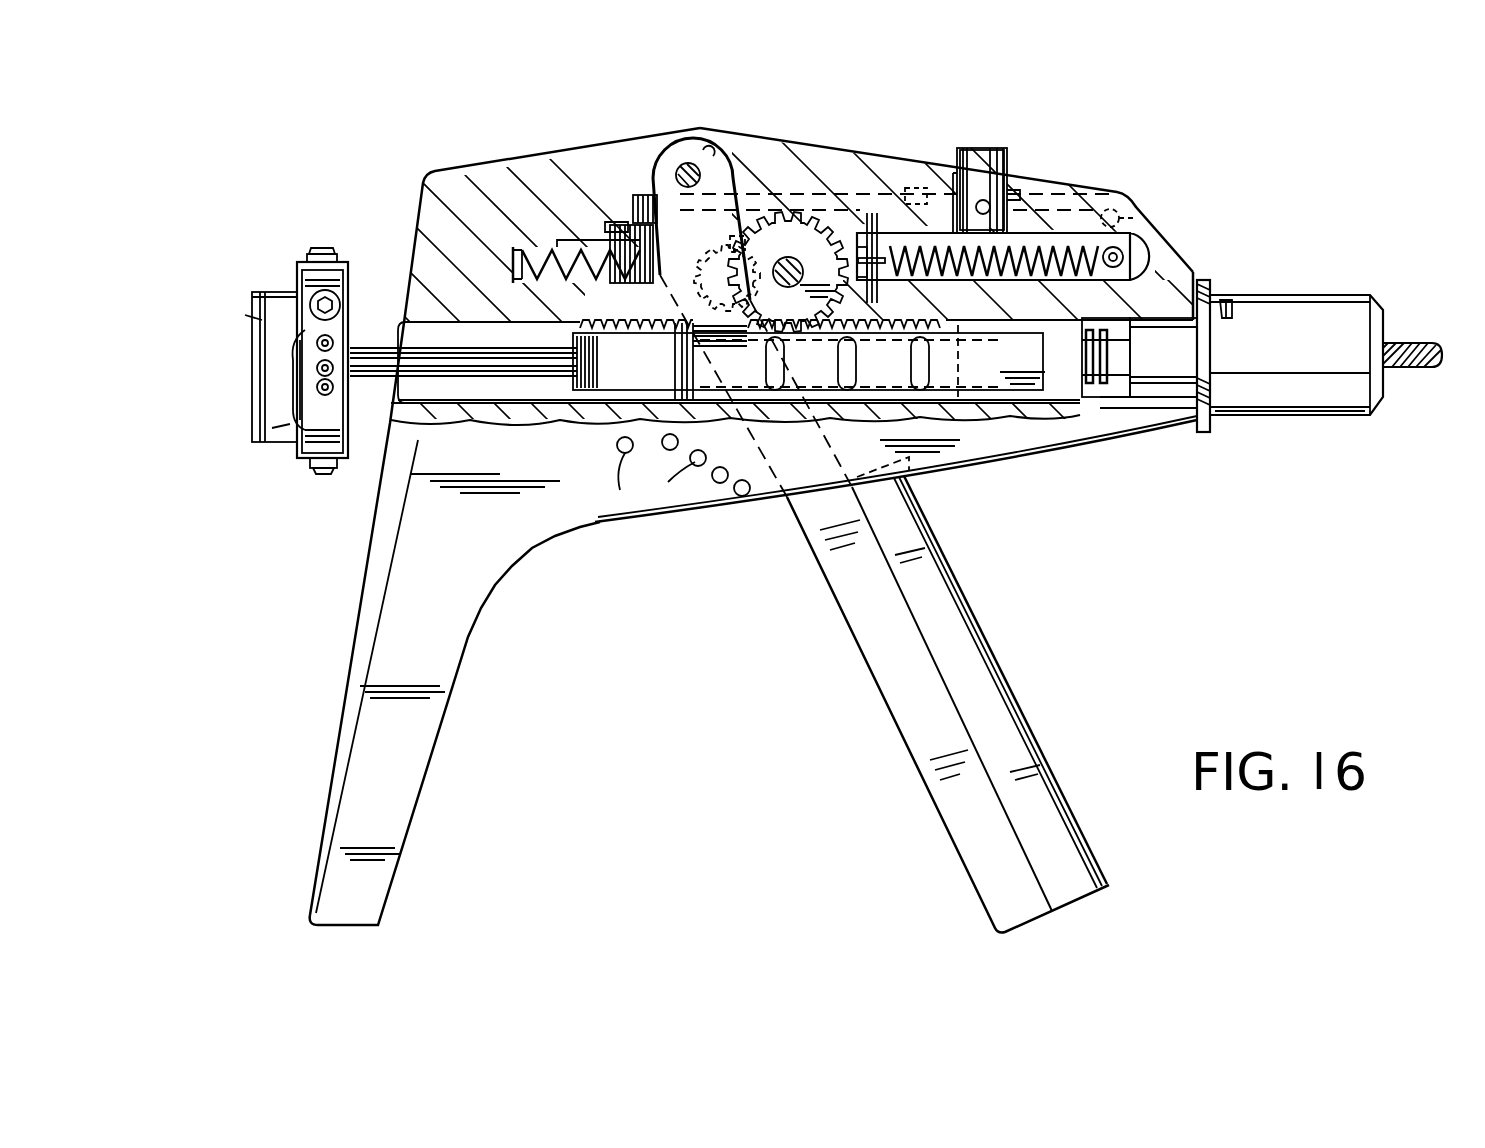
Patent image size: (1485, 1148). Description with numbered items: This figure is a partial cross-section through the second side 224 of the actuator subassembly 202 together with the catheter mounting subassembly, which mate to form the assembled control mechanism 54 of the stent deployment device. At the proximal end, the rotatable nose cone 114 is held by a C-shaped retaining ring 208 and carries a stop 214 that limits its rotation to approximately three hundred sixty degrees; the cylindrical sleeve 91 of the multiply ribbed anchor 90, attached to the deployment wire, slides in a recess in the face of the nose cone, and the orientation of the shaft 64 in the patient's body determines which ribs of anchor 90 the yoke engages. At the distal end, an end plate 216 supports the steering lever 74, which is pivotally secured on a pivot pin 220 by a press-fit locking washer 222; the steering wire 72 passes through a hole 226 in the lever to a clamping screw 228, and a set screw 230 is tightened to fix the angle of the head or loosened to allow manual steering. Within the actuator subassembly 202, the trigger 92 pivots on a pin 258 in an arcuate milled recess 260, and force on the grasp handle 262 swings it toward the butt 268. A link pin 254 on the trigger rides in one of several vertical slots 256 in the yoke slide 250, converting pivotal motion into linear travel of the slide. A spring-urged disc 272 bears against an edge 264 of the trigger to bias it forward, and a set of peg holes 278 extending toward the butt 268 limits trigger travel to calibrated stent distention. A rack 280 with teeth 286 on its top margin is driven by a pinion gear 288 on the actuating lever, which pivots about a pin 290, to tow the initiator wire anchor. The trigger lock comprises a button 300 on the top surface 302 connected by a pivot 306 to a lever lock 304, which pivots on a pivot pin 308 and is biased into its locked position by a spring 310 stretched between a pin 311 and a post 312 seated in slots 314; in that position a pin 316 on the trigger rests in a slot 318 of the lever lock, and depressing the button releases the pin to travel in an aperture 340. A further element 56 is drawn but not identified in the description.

The control mechanism 54 is at (511, 160).
The lower rod 56 is at (477, 367).
The shaft 64 is at (1413, 345).
The steering wire 72 is at (497, 377).
The steering lever 74 is at (303, 443).
The multiply ribbed anchor 90 is at (1118, 387).
The cylindrical sleeve 91 is at (1120, 357).
The trigger 92 is at (712, 186).
The nose cone 114 is at (1297, 400).
The actuator subassembly 202 is at (1187, 259).
The C-shaped retaining ring 208 is at (1203, 362).
The stop 214 is at (1232, 312).
The end plate 216 is at (267, 353).
The pivot pin 220 is at (349, 347).
The locking washer 222 is at (303, 373).
The second side 224 is at (1117, 193).
The hole 226 is at (540, 247).
The clamping screw 228 is at (316, 250).
The set screw 230 is at (302, 300).
The yoke slide 250 is at (992, 390).
The link pin 254 is at (767, 357).
The vertical slots 256 is at (850, 350).
The pin 258 is at (688, 163).
The arcuate shaped milled recess 260 is at (713, 153).
The grasp handle 262 is at (1013, 728).
The edge 264 is at (606, 225).
The butt 268 is at (417, 753).
The disc 272 is at (657, 287).
The peg holes 278 is at (735, 488).
The rack 280 is at (590, 405).
The teeth 286 is at (928, 335).
The pinion gear 288 is at (870, 232).
The pin 290 is at (860, 240).
The button 300 is at (1007, 155).
The top surface 302 is at (922, 157).
The lever lock 304 is at (1050, 200).
The pivot 306 is at (976, 208).
The pivot pin 308 is at (1140, 214).
The spring 310 is at (1050, 290).
The pin 311 is at (1135, 284).
The post 312 is at (887, 285).
The slots 314 is at (913, 190).
The pin 316 is at (733, 273).
The slot 318 is at (730, 240).
The aperture 340 is at (637, 195).